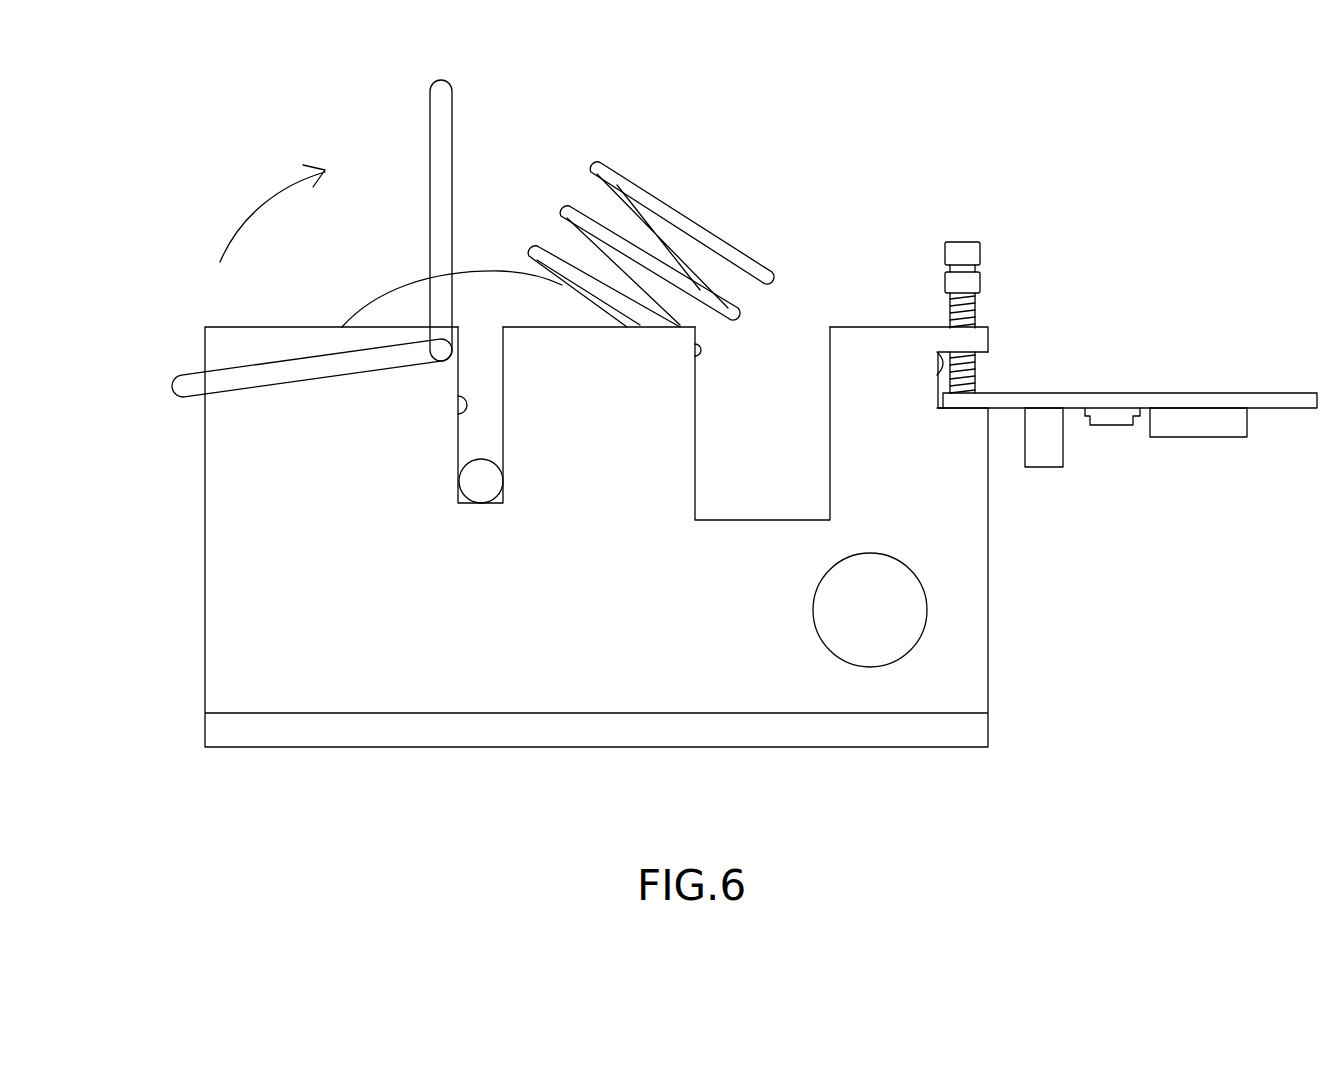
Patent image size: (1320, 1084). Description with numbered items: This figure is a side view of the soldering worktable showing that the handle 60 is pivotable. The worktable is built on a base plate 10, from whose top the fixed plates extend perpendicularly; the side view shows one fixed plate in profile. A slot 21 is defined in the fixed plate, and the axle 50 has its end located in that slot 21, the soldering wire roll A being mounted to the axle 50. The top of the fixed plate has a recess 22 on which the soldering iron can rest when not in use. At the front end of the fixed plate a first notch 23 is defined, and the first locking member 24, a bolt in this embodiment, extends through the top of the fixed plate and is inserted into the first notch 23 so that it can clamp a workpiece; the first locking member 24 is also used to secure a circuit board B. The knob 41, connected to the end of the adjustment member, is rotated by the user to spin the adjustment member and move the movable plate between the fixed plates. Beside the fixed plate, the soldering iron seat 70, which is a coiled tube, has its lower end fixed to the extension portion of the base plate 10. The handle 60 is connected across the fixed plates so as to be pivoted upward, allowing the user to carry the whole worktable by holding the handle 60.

The base plate 10 is at (470, 737).
The slot 21 is at (458, 408).
The recess 22 is at (730, 520).
The first notch 23 is at (938, 362).
The first locking member 24 is at (972, 253).
The knob 41 is at (915, 608).
The axle 50 is at (462, 478).
The handle 60 is at (188, 384).
The soldering iron seat 70 is at (683, 222).
The soldering wire roll A is at (388, 293).
The circuit board B is at (1197, 398).